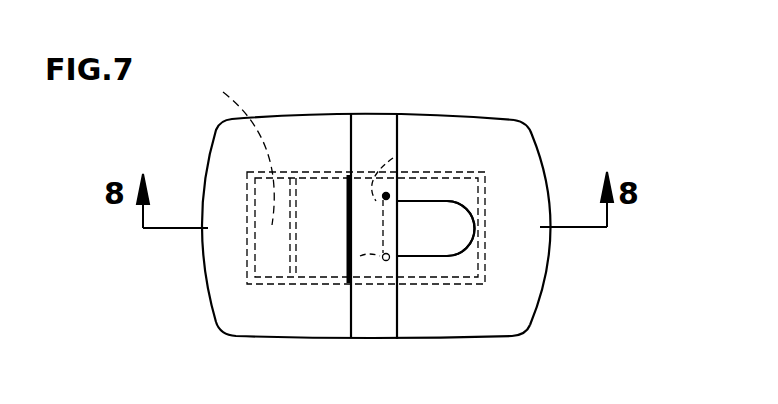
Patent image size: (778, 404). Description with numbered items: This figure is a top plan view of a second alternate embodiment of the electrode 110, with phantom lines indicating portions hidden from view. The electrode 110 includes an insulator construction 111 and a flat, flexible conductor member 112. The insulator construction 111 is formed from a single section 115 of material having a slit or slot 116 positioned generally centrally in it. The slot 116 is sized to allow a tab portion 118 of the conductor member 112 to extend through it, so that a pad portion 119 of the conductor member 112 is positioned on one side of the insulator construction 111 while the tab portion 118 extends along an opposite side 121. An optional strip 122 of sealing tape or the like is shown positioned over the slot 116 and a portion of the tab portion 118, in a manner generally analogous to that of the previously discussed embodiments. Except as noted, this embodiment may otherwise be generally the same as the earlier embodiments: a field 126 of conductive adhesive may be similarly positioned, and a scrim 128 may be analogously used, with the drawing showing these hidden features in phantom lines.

The electrode 110 is at (451, 96).
The insulator construction 111 is at (337, 336).
The conductor member 112 is at (426, 250).
The single section 115 is at (515, 303).
The slot 116 is at (393, 158).
The tab portion 118 is at (455, 226).
The pad portion 119 is at (318, 258).
The opposite side 121 is at (522, 168).
The strip of sealing tape 122 is at (372, 131).
The field of conductive adhesive 126 is at (456, 172).
The scrim 128 is at (240, 146).